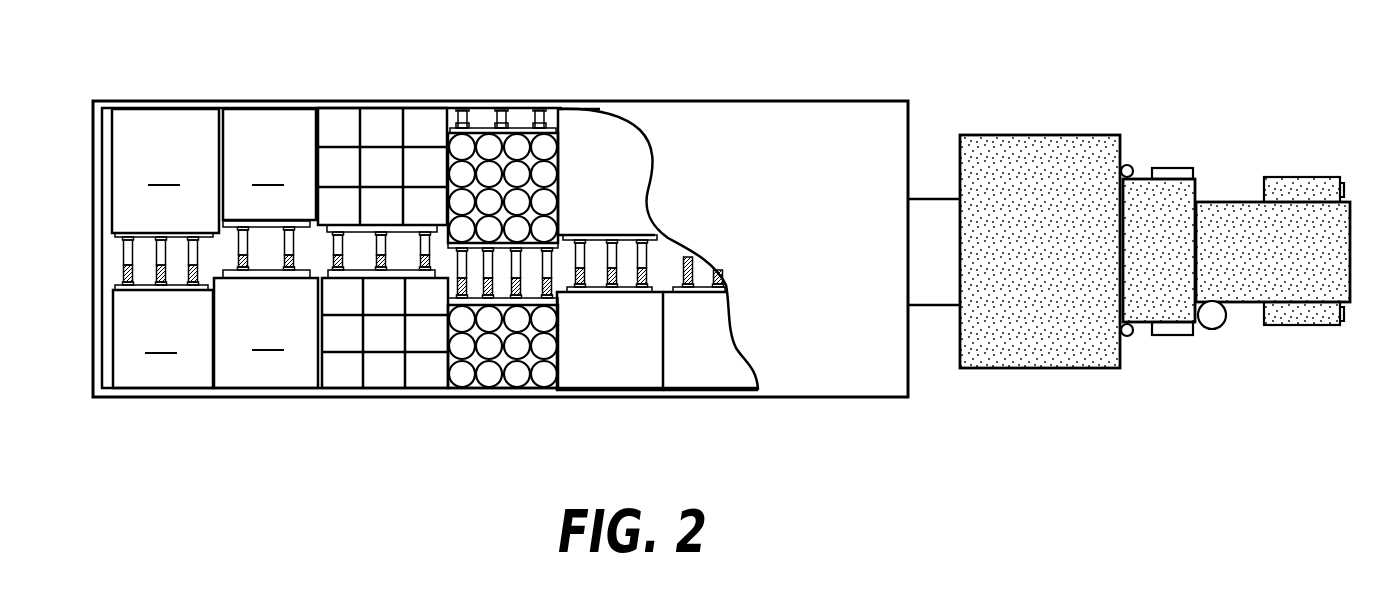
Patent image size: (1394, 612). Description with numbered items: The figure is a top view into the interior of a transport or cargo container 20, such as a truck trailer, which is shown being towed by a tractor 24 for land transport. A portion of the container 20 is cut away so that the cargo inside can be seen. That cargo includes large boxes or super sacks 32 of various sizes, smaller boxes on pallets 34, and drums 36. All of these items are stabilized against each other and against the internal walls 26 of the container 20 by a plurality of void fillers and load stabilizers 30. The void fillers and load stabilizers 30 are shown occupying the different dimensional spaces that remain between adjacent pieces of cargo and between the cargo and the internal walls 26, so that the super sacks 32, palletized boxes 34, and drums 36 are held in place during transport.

The transport or cargo container 20 is at (770, 100).
The tractor 24 is at (1359, 233).
The internal walls 26 is at (418, 106).
The void fillers and load stabilizers 30 is at (555, 259).
The large boxes or super sacks 32 is at (182, 127).
The smaller boxes on pallets 34 is at (333, 122).
The drums 36 is at (557, 128).